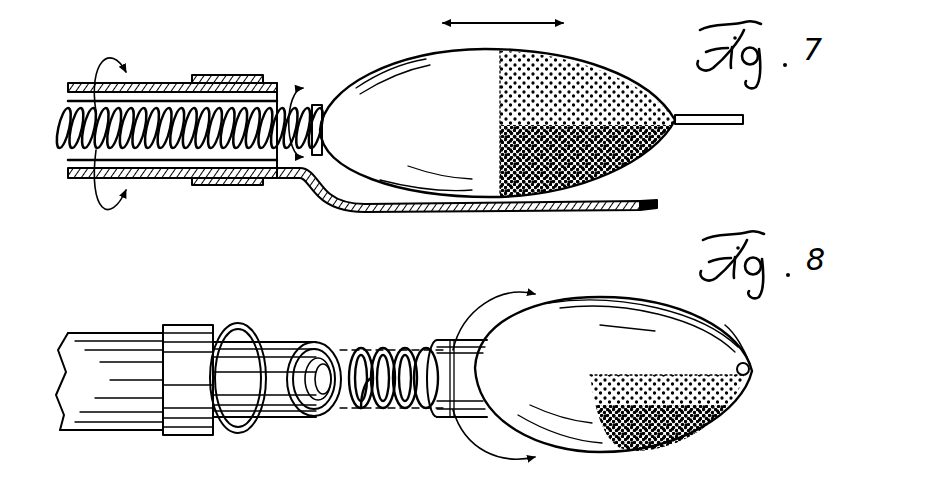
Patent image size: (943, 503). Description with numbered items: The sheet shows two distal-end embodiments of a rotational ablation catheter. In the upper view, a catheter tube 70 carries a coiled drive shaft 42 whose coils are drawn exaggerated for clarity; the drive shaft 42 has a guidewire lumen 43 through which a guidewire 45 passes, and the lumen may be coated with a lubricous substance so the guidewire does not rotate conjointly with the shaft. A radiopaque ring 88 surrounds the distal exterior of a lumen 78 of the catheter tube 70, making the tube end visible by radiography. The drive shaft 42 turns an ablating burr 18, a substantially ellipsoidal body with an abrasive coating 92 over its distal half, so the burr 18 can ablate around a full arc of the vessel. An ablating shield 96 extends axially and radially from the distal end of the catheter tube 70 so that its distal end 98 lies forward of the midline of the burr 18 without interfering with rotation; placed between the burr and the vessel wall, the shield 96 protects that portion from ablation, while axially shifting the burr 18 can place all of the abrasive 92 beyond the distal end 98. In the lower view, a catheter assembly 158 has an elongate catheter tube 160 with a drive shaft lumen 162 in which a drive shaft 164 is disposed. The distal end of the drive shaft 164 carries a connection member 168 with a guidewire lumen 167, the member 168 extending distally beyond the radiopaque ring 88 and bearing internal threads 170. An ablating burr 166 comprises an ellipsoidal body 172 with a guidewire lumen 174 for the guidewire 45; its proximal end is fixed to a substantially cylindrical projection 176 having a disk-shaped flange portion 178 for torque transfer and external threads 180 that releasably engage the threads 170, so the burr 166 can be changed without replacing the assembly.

In FIG. 7, the ablating burr 18 is at (407, 86).
In FIG. 7, the drive shaft 42 is at (217, 108).
In FIG. 7, the guidewire lumen 43 is at (150, 112).
In FIG. 7, the guidewire 45 is at (742, 124).
In FIG. 7, the catheter tube 70 is at (160, 178).
In FIG. 7, the lumen 78 is at (290, 95).
In FIG. 7, the ring 88 is at (245, 184).
In FIG. 8, the ring 88 is at (262, 330).
In FIG. 7, the abrasive coating 92 is at (623, 63).
In FIG. 8, the abrasive coating 92 is at (727, 418).
In FIG. 7, the ablating shield 96 is at (548, 210).
In FIG. 7, the distal end 98 is at (657, 205).
In FIG. 8, the catheter assembly 158 is at (348, 302).
In FIG. 8, the catheter tube 160 is at (128, 428).
In FIG. 8, the drive shaft lumen 162 is at (258, 330).
In FIG. 8, the drive shaft 164 is at (242, 437).
In FIG. 8, the ablating burr 166 is at (638, 313).
In FIG. 8, the guidewire lumen 167 is at (300, 415).
In FIG. 8, the connection member 168 is at (306, 418).
In FIG. 8, the threads 170 is at (330, 345).
In FIG. 8, the ellipsoidal body 172 is at (741, 333).
In FIG. 8, the guidewire lumen 174 is at (751, 367).
In FIG. 8, the projection 176 is at (388, 337).
In FIG. 8, the flange portion 178 is at (452, 350).
In FIG. 8, the threads 180 is at (386, 411).